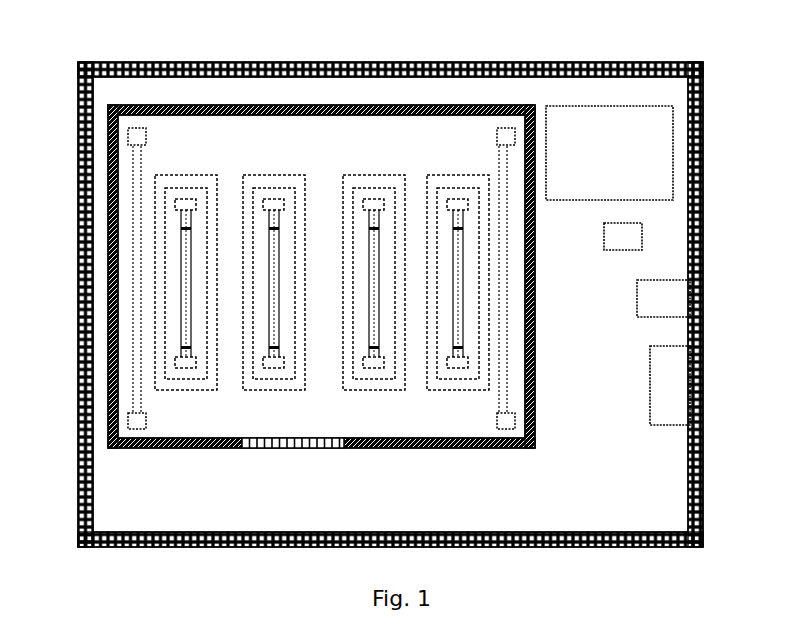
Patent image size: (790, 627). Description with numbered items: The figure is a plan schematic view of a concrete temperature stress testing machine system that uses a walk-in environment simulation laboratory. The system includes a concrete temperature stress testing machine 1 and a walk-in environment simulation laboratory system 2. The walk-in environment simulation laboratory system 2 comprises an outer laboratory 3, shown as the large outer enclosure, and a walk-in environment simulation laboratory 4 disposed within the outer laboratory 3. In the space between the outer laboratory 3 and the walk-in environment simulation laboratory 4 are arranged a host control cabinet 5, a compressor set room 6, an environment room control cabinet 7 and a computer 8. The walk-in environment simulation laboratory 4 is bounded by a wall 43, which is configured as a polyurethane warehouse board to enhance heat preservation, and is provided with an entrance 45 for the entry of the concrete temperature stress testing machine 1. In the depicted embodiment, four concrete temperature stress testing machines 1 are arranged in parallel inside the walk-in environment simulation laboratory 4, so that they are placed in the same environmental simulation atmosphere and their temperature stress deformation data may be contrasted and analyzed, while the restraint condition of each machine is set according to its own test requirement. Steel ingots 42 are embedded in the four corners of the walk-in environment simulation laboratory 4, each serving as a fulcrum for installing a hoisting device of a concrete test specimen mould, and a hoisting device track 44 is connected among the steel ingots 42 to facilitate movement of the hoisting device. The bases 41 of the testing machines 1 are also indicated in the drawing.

The concrete temperature stress testing machine 1 is at (447, 243).
The walk-in environment simulation laboratory system 2 is at (400, 47).
The outer laboratory 3 is at (302, 90).
The walk-in environment simulation laboratory 4 is at (383, 107).
The wall 43 is at (243, 105).
The hoisting device track 44 is at (130, 291).
The entrance 45 is at (327, 447).
The lamp base 41 is at (427, 392).
The steel ingot 42 is at (147, 137).
The host control cabinet 5 is at (663, 298).
The compressor set room 6 is at (609, 153).
The environment room control cabinet 7 is at (623, 236).
The computer 8 is at (670, 385).